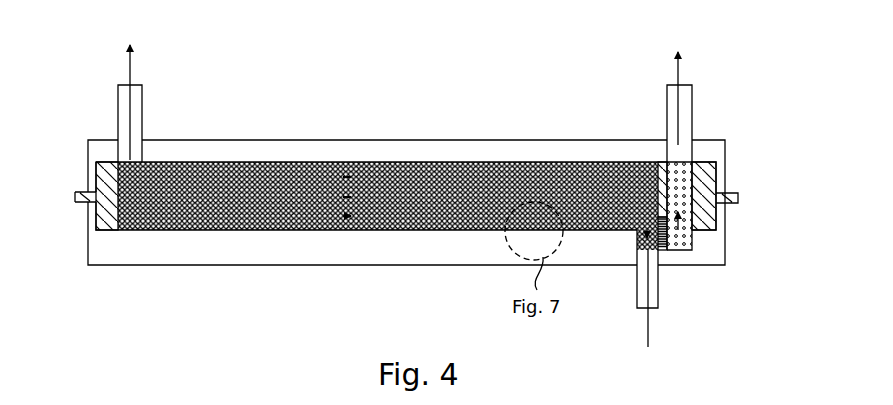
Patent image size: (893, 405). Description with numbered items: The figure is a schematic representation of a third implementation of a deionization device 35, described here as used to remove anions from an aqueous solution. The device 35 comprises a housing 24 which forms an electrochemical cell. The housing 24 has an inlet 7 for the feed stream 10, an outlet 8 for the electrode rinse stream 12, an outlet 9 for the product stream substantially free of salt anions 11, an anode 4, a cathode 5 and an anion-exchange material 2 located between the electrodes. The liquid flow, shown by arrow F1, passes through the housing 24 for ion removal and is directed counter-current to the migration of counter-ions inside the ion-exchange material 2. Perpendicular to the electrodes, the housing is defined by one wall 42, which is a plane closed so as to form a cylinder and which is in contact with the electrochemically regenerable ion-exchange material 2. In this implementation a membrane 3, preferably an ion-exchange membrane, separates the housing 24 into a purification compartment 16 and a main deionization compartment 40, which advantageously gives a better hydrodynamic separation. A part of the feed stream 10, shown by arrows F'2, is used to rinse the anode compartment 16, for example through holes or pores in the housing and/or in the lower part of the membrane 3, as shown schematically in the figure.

The anion-exchange material 2 is at (281, 209).
The membrane 3 is at (668, 196).
The anode 4 is at (738, 197).
The cathode 5 is at (104, 180).
The inlet 7 is at (637, 293).
The outlet 8 is at (667, 100).
The outlet 9 is at (118, 120).
The feed stream 10 is at (661, 370).
The product stream 11 is at (141, 33).
The electrode rinse stream 12 is at (694, 36).
The purification compartment 16 is at (684, 176).
The housing 24 is at (305, 248).
The deionization device 35 is at (499, 108).
The main deionization compartment 40 is at (459, 233).
The wall 42 is at (522, 233).
The liquid flow F1 is at (128, 210).
The feed stream part F'2 is at (699, 260).